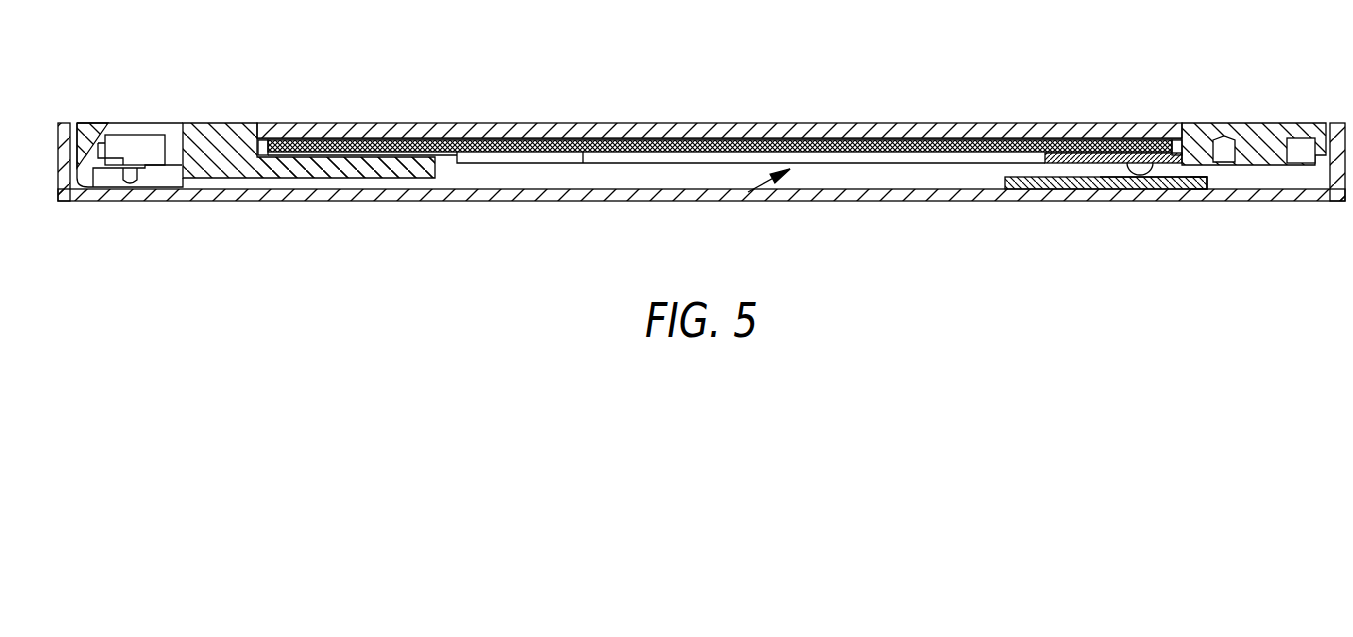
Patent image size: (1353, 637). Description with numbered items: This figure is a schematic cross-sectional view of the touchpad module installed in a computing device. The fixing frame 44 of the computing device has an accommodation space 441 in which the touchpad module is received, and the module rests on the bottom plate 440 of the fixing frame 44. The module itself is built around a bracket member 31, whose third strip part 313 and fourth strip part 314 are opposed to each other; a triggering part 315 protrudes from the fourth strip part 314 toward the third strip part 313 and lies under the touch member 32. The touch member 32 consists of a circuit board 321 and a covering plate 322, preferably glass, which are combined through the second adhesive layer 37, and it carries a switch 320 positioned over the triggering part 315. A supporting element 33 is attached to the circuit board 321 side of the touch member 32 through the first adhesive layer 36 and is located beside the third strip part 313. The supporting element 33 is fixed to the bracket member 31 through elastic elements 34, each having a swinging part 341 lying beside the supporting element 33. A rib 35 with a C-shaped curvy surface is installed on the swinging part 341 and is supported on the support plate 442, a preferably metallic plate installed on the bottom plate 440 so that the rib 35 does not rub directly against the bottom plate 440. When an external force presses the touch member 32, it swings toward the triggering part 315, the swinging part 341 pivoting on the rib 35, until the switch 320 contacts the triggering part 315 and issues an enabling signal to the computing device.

The bracket member 31 is at (701, 152).
The third strip part 313 is at (1250, 138).
The fourth strip part 314 is at (203, 128).
The triggering part 315 is at (285, 165).
The touch member 32 is at (719, 87).
The switch 320 is at (355, 158).
The circuit board 321 is at (834, 128).
The covering plate 322 is at (900, 143).
The supporting element 33 is at (1086, 155).
The elastic element 34 is at (1104, 219).
The swinging part 341 is at (1049, 181).
The rib 35 is at (1152, 180).
The first adhesive layer 36 is at (1122, 176).
The second adhesive layer 37 is at (985, 137).
The fixing frame 44 is at (701, 198).
The bottom plate 440 is at (900, 191).
The accommodation space 441 is at (748, 192).
The support plate 442 is at (1200, 190).